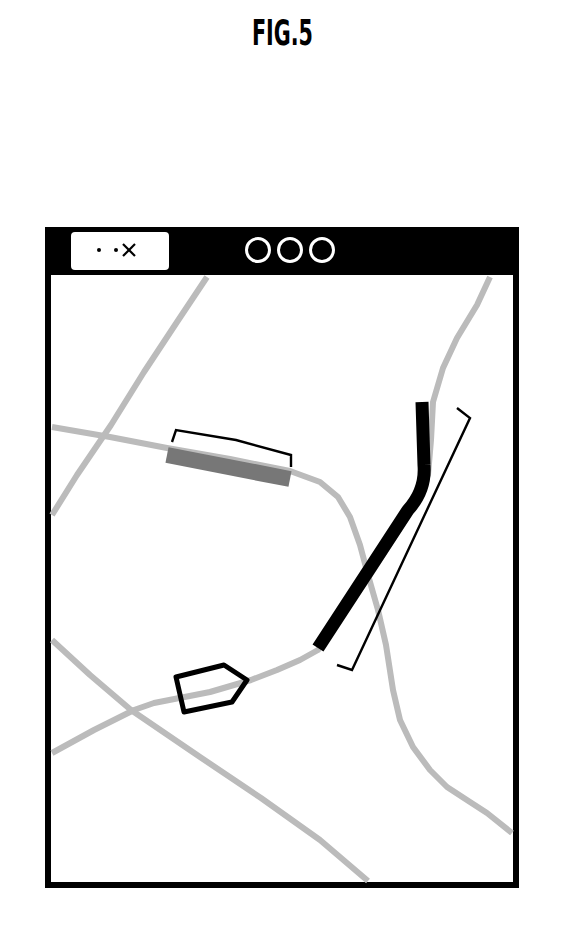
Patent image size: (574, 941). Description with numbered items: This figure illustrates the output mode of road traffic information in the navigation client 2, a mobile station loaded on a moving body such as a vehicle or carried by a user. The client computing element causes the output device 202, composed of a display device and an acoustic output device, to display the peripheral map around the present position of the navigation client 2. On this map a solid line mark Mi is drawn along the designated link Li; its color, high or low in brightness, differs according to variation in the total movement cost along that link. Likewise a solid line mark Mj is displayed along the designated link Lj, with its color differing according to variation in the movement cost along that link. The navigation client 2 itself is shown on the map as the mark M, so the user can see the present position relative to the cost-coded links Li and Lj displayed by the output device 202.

The navigation client 2 is at (194, 213).
The output device 202 is at (282, 556).
The solid line mark Mi is at (417, 420).
The solid line mark Mj is at (230, 471).
The designated link Li is at (411, 544).
The designated link Lj is at (235, 440).
The mark M is at (185, 672).